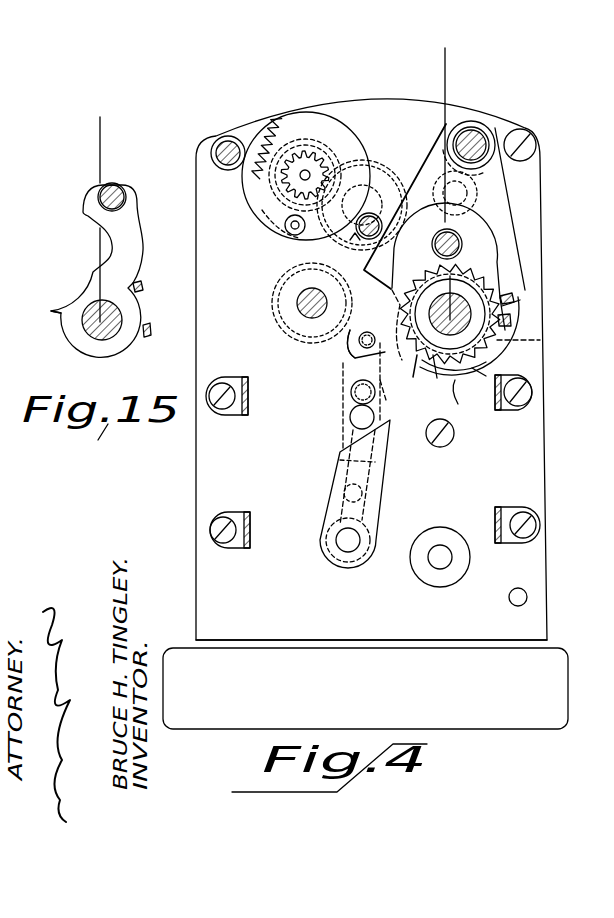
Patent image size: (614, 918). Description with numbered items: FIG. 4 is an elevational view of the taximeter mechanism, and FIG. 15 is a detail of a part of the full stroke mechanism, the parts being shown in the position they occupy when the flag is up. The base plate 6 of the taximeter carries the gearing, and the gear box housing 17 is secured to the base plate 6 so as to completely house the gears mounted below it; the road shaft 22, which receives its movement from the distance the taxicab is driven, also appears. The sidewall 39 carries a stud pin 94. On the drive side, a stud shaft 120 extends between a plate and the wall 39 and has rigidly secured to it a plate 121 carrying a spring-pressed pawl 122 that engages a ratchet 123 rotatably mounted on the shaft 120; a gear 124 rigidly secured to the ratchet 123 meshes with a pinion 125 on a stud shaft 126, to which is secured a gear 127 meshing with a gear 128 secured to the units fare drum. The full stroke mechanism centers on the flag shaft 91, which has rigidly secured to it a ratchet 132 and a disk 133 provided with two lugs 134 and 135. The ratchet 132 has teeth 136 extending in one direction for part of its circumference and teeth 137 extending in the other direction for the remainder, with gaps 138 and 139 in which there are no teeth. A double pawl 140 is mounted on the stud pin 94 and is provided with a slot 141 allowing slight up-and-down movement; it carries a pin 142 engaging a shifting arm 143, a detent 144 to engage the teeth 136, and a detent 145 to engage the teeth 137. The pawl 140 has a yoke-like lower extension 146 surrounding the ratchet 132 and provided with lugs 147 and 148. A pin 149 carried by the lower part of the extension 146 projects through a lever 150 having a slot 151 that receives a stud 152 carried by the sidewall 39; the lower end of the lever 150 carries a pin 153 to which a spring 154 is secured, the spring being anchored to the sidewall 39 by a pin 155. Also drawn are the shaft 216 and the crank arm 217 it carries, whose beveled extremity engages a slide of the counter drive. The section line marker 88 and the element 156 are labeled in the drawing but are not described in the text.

In FIG. 4, the base plate 6 is at (433, 641).
In FIG. 4, the gear box housing 17 is at (365, 688).
In FIG. 4, the road shaft 22 is at (432, 562).
In FIG. 4, the sidewall 39 is at (482, 471).
In FIG. 4, the section line 88 is at (445, 68).
In FIG. 15, the section line 88 is at (100, 135).
In FIG. 4, the flag shaft 91 is at (449, 313).
In FIG. 15, the flag shaft 91 is at (97, 332).
In FIG. 4, the stud pin 94 is at (455, 143).
In FIG. 4, the stud shaft 120 is at (305, 175).
In FIG. 4, the plate 121 is at (343, 112).
In FIG. 4, the spring-pressed pawl 122 is at (270, 220).
In FIG. 4, the ratchet 123 is at (277, 240).
In FIG. 4, the gear 124 is at (367, 193).
In FIG. 4, the pinion 125 is at (355, 243).
In FIG. 4, the stud shaft 126 is at (364, 221).
In FIG. 4, the gear 127 is at (392, 186).
In FIG. 4, the gear 128 is at (280, 308).
In FIG. 4, the ratchet 132 is at (479, 369).
In FIG. 4, the disk 133 is at (540, 340).
In FIG. 4, the lug 134 is at (511, 320).
In FIG. 15, the lug 134 is at (163, 332).
In FIG. 4, the lug 135 is at (506, 298).
In FIG. 15, the lug 135 is at (142, 287).
In FIG. 4, the teeth 136 is at (462, 282).
In FIG. 4, the teeth 137 is at (413, 377).
In FIG. 4, the gap 138 is at (432, 273).
In FIG. 4, the gap 139 is at (437, 378).
In FIG. 4, the double pawl 140 is at (479, 201).
In FIG. 4, the slot 141 is at (478, 130).
In FIG. 4, the pin 142 is at (479, 188).
In FIG. 15, the pin 142 is at (117, 190).
In FIG. 4, the shifting arm 143 is at (462, 243).
In FIG. 15, the shifting arm 143 is at (97, 271).
In FIG. 4, the detent 144 is at (510, 310).
In FIG. 4, the detent 145 is at (348, 286).
In FIG. 4, the yoke-like lower extension 146 is at (505, 356).
In FIG. 4, the lug 147 is at (468, 398).
In FIG. 4, the lug 148 is at (386, 387).
In FIG. 4, the pin 149 is at (358, 350).
In FIG. 4, the lever 150 is at (352, 423).
In FIG. 4, the slot 151 is at (350, 416).
In FIG. 4, the stud 152 is at (351, 396).
In FIG. 4, the pin 153 is at (344, 493).
In FIG. 4, the spring 154 is at (345, 463).
In FIG. 4, the pin 155 is at (342, 314).
In FIG. 4, the notch 156 is at (375, 321).
In FIG. 15, the notch 156 is at (56, 312).
In FIG. 4, the shaft 216 is at (350, 548).
In FIG. 4, the crank arm 217 is at (388, 480).